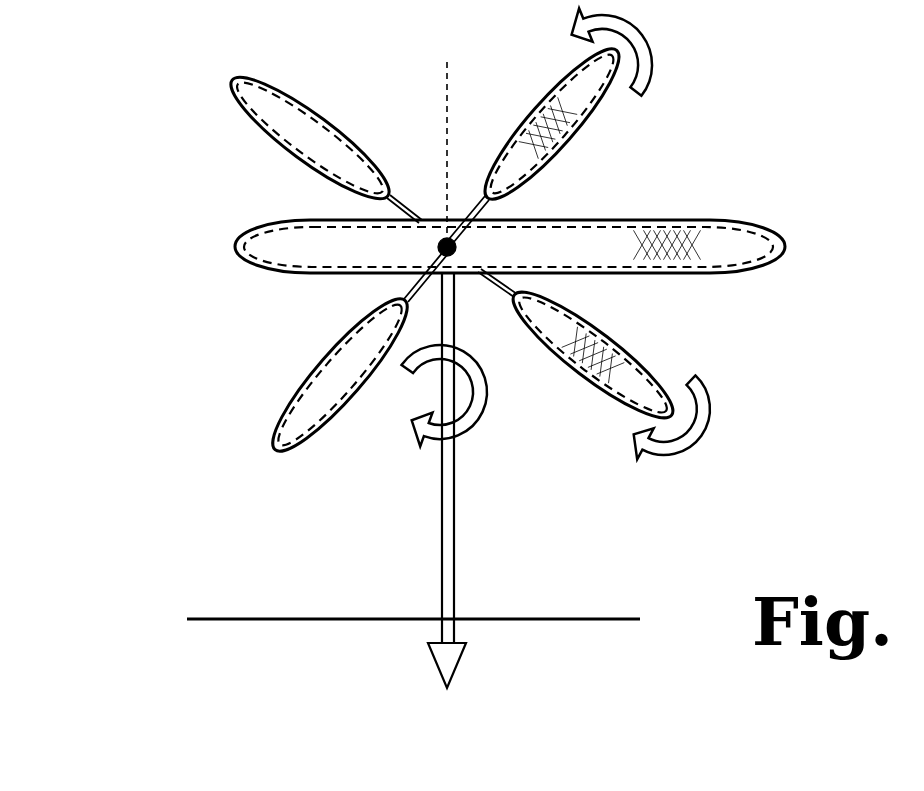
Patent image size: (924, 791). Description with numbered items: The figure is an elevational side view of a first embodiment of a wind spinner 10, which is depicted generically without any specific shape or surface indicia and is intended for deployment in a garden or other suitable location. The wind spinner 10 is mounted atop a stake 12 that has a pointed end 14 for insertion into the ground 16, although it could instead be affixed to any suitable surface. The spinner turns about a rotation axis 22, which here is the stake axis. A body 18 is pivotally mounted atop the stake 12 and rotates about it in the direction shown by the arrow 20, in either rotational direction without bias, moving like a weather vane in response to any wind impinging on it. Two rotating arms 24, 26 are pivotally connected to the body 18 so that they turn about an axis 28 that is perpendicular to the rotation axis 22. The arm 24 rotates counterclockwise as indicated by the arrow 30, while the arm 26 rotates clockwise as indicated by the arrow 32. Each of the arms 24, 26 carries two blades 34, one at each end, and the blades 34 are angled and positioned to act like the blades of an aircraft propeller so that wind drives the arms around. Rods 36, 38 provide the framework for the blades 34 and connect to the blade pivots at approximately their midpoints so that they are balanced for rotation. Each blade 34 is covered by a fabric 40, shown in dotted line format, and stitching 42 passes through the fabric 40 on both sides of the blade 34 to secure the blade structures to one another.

The wind spinner 10 is at (157, 150).
The stake 12 is at (455, 525).
The pointed end 14 is at (462, 654).
The ground 16 is at (340, 619).
The body 18 is at (587, 220).
The arrow 20 is at (478, 422).
The rotation axis 22 is at (442, 77).
The rotating arm 24 is at (270, 450).
The rotating arm 26 is at (232, 80).
The axis 28 is at (438, 247).
The arrow 30 is at (652, 75).
The arrow 32 is at (707, 395).
The blade 34 is at (297, 152).
The rod 36 is at (467, 212).
The rod 38 is at (497, 290).
The fabric 40 is at (535, 122).
The stitching 42 is at (780, 242).